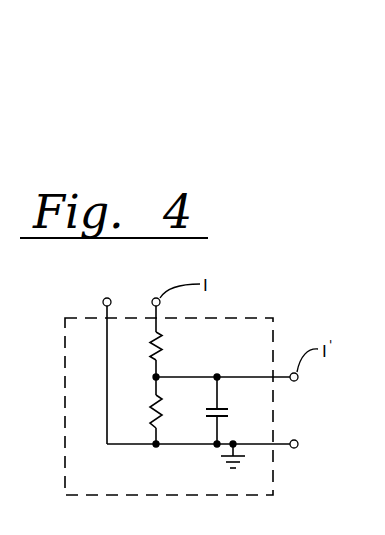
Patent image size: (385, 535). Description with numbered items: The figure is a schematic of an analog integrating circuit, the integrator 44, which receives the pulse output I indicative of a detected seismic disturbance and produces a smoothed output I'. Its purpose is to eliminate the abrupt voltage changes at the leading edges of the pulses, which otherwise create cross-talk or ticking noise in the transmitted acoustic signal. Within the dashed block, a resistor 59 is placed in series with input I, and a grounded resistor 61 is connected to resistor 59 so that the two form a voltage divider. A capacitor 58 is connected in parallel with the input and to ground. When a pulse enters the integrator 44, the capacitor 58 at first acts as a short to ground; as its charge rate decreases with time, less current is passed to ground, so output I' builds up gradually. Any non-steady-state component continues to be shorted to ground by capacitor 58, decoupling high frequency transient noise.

The integrator 44 is at (234, 316).
The resistor 59 is at (170, 354).
The grounded resistor 61 is at (139, 410).
The capacitor 58 is at (229, 410).